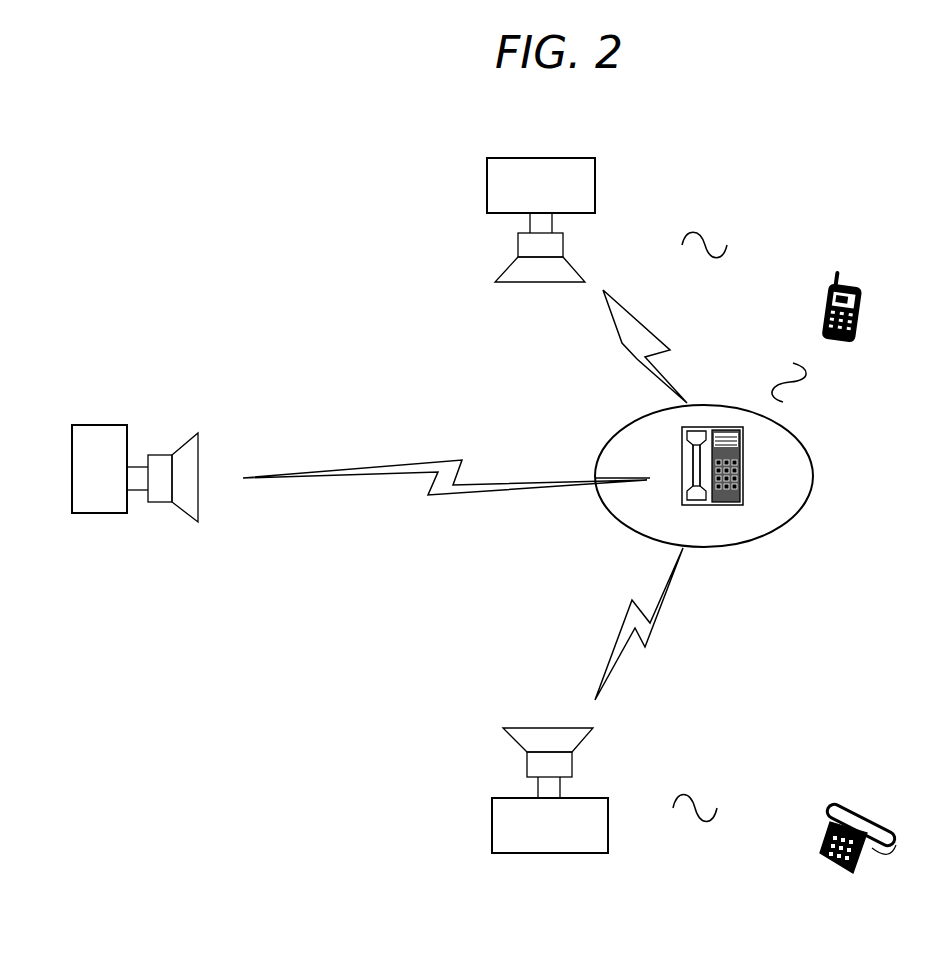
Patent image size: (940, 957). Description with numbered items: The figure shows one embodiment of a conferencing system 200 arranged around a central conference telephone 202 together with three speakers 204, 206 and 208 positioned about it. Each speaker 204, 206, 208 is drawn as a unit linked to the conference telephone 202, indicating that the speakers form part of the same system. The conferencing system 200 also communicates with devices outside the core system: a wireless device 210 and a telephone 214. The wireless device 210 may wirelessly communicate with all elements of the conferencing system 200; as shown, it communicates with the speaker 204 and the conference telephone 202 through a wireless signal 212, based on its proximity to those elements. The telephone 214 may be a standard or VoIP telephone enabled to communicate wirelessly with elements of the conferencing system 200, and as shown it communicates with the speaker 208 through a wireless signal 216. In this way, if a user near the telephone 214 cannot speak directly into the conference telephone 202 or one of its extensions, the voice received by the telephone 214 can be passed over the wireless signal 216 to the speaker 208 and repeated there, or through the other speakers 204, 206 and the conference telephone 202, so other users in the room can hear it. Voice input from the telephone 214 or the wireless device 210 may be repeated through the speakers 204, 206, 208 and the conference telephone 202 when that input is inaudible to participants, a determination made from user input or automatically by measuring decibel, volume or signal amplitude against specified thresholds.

The conferencing system 200 is at (875, 148).
The conference telephone 202 is at (735, 505).
The speaker 204 is at (541, 220).
The speaker 206 is at (135, 473).
The speaker 208 is at (550, 790).
The wireless device 210 is at (867, 338).
The wireless signal 212 is at (761, 320).
The telephone 214 is at (847, 901).
The wireless signal 216 is at (695, 827).